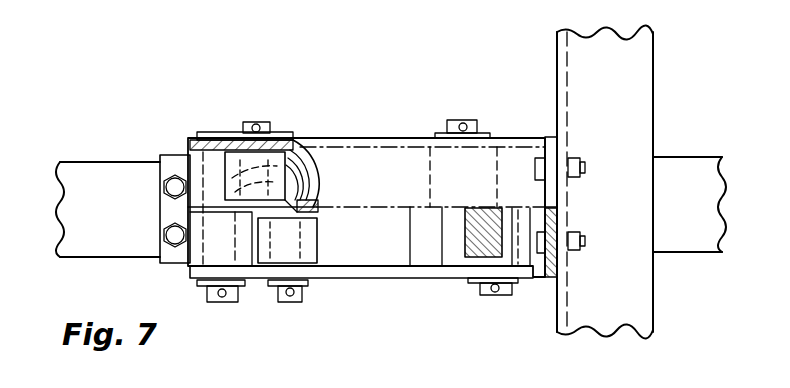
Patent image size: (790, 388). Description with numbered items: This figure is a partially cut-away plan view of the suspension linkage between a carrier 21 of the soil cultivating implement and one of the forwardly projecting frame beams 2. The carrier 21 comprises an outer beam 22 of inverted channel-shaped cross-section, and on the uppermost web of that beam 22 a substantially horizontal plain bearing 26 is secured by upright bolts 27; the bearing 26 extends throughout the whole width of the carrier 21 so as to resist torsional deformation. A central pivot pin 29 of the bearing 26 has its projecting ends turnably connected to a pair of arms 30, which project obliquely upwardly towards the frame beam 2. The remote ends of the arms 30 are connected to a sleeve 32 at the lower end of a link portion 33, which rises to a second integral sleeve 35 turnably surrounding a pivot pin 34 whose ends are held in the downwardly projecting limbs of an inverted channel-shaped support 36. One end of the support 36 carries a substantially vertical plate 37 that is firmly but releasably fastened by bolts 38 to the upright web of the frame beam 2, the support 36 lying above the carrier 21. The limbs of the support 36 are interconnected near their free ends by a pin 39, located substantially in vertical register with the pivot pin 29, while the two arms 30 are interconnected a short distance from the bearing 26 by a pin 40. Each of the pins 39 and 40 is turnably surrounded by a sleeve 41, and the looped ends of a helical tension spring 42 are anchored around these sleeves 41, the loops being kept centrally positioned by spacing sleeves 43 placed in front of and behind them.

The beam 2 is at (653, 108).
The carrier 21 is at (694, 263).
The beam 22 is at (106, 158).
The bearing 26 is at (192, 264).
The bolt 27 is at (166, 228).
The pivot pin 29 is at (228, 302).
The arm 30 is at (188, 140).
The sleeve 32 is at (520, 260).
The link portion 33 is at (488, 296).
The pivot pin 34 is at (468, 119).
The second sleeve 35 is at (428, 178).
The support 36 is at (372, 150).
The plate 37 is at (552, 137).
The bolt 38 is at (578, 228).
The pin 39 is at (262, 121).
The pin 40 is at (300, 302).
The sleeve 41 is at (278, 152).
The helical tension spring 42 is at (314, 187).
The spacing sleeve 43 is at (294, 142).